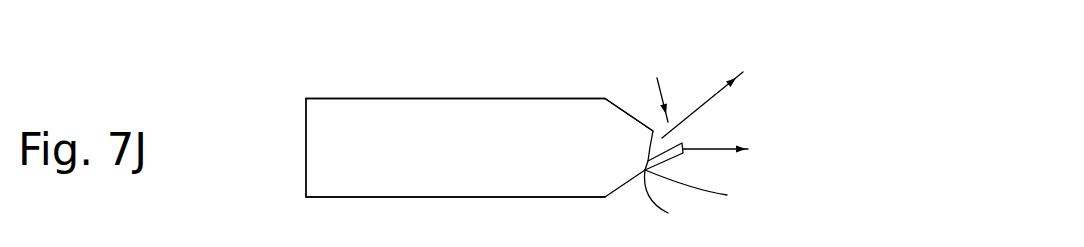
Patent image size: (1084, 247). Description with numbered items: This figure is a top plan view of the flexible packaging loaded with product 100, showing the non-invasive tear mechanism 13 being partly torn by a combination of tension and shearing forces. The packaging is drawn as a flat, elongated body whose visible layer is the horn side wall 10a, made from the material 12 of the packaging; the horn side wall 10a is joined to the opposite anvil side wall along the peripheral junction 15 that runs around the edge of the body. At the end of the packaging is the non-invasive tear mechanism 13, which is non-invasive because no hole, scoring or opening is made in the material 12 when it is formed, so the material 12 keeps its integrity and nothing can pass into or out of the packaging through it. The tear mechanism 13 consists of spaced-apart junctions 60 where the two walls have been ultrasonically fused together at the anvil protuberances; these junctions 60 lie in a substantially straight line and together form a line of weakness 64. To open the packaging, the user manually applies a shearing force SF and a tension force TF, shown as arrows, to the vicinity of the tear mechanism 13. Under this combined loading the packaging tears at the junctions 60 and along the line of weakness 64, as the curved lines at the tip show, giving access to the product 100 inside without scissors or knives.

The horn side wall 10a is at (498, 153).
The material 12 is at (517, 117).
The non-invasive tear mechanism 13 is at (645, 170).
The peripheral junction 15 is at (385, 98).
The junctions 60 is at (665, 208).
The line of weakness 64 is at (700, 189).
The shearing force SF is at (654, 82).
The tension force TF is at (733, 149).
The product 100 is at (720, 94).